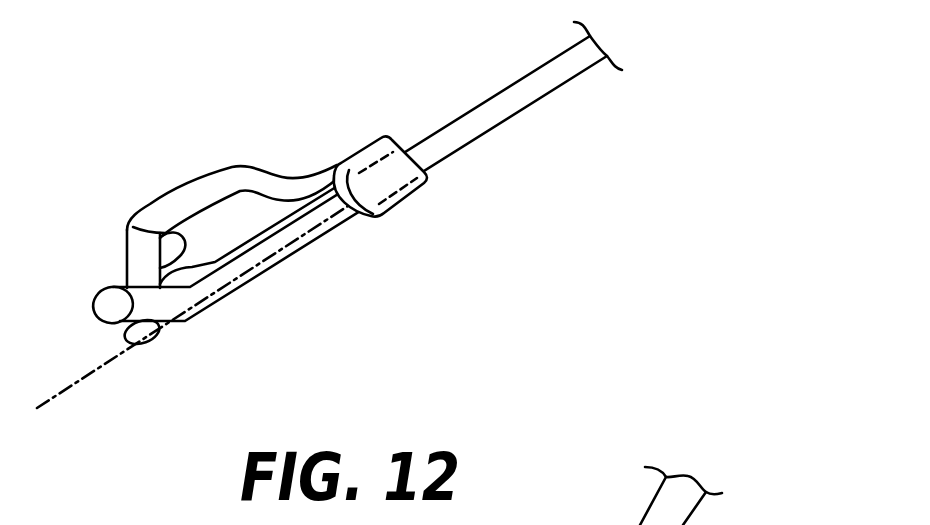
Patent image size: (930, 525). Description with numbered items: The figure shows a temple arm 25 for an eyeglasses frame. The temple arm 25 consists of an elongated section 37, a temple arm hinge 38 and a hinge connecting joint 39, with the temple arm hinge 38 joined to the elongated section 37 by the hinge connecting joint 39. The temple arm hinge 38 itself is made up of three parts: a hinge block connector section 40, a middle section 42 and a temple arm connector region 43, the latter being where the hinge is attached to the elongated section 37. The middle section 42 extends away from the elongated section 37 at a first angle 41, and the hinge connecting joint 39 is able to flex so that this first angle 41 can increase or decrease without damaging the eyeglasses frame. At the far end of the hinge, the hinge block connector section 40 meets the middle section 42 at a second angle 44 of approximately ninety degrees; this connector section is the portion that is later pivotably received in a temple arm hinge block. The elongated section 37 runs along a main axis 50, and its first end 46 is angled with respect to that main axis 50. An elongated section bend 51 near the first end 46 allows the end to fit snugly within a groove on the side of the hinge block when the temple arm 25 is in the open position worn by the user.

The temple arm 25 is at (329, 239).
The elongated section 37 is at (295, 256).
The temple arm hinge 38 is at (198, 167).
The hinge connecting joint 39 is at (418, 193).
The hinge block connector section 40 is at (125, 250).
The first angle 41 is at (280, 199).
The middle section 42 is at (255, 168).
The temple arm connector region 43 is at (378, 152).
The second angle 44 is at (133, 228).
The first end 46 is at (180, 321).
The main axis 50 is at (40, 411).
The elongated section bend 51 is at (190, 273).